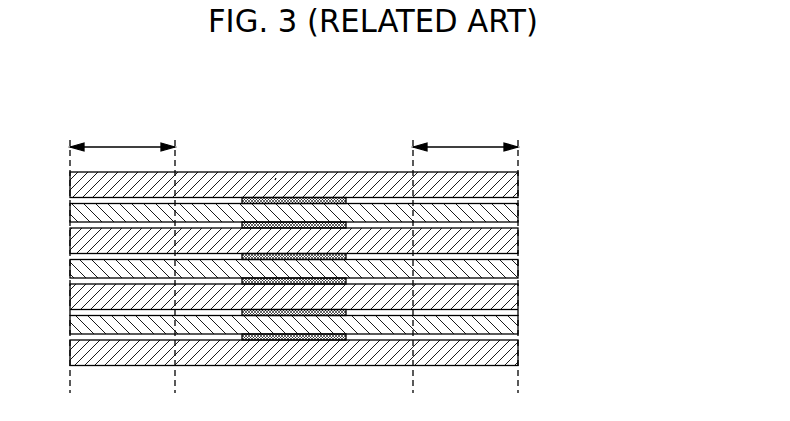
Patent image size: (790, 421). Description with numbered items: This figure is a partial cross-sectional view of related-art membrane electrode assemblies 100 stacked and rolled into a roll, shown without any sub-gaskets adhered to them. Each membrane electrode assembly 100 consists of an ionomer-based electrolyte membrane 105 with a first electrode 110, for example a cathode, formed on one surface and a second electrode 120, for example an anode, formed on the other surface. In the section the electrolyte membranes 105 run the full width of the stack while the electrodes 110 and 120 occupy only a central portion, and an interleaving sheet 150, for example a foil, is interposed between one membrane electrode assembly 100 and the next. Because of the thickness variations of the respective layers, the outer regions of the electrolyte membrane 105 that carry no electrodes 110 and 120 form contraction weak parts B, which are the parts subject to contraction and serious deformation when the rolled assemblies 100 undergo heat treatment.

The membrane electrode assembly 100 is at (372, 255).
The first electrode 110 is at (348, 194).
The electrolyte membrane 105 is at (457, 213).
The second electrode 120 is at (348, 227).
The interleaving sheet 150 is at (275, 180).
The contraction weak part B is at (452, 147).